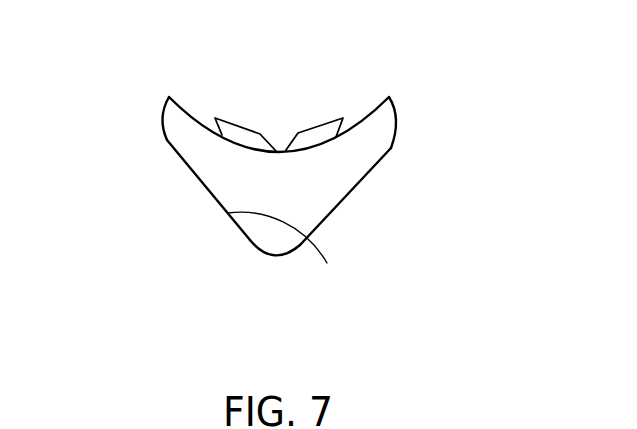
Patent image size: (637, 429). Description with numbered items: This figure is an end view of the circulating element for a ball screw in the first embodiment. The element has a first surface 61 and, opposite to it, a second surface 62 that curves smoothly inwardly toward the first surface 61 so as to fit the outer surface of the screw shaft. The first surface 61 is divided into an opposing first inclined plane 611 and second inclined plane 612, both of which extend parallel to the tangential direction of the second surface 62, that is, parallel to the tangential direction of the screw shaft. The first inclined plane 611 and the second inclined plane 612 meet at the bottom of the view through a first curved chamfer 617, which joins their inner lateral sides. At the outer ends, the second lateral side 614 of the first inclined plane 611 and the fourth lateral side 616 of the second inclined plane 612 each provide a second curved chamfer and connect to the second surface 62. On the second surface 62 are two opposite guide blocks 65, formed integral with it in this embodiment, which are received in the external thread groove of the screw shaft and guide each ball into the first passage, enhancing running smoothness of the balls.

The first surface 61 is at (410, 285).
The first inclined plane 611 is at (343, 205).
The second inclined plane 612 is at (289, 257).
The second lateral side 614 is at (398, 115).
The fourth lateral side 616 is at (165, 118).
The first curved chamfer 617 is at (273, 256).
The second surface 62 is at (188, 118).
The guide blocks 65 is at (317, 137).